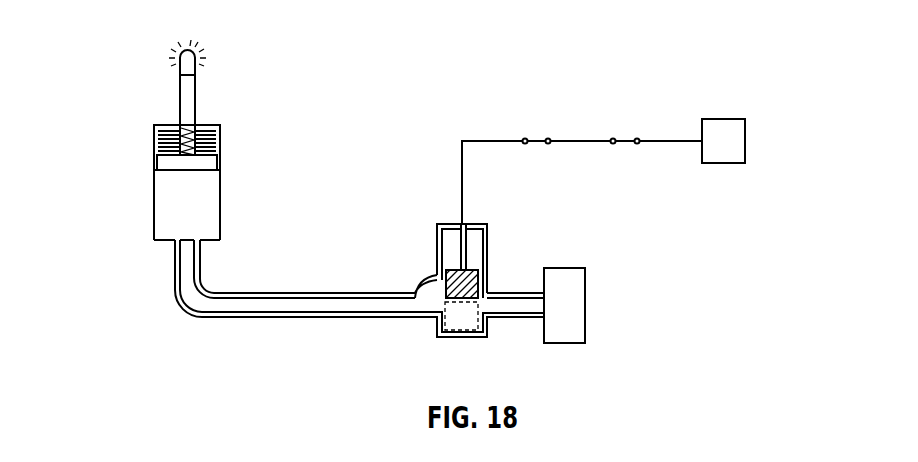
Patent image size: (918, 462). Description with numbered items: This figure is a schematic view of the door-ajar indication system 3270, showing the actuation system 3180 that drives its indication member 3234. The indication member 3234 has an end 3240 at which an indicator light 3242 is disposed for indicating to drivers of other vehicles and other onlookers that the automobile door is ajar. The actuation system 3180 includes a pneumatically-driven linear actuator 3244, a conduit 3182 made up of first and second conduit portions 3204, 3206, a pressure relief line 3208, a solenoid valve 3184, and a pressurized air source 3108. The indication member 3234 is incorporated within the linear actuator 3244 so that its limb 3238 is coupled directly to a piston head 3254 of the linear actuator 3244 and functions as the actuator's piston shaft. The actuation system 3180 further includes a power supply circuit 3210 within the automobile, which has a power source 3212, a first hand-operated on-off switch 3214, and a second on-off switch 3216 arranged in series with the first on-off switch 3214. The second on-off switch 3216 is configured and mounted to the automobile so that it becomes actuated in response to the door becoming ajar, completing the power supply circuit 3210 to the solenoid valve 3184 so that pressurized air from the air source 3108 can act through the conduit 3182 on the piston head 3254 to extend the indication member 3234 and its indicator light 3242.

The indicator light 3242 is at (186, 49).
The end 3240 is at (152, 60).
The indication member 3234 is at (212, 71).
The limb 3238 is at (187, 112).
The pneumatically-driven linear actuator 3244 is at (237, 161).
The piston head 3254 is at (166, 172).
The actuation system 3180 is at (184, 331).
The conduit 3182 is at (385, 341).
The second conduit portion 3206 is at (330, 292).
The pressure relief line 3208 is at (427, 280).
The solenoid valve 3184 is at (478, 211).
The first conduit portion 3204 is at (515, 292).
The pressurized air source 3108 is at (576, 303).
The door-ajar indication system 3270 is at (514, 357).
The power supply circuit 3210 is at (597, 74).
The second on-off switch 3216 is at (542, 138).
The first hand-operated on-off switch 3214 is at (627, 138).
The power source 3212 is at (721, 163).